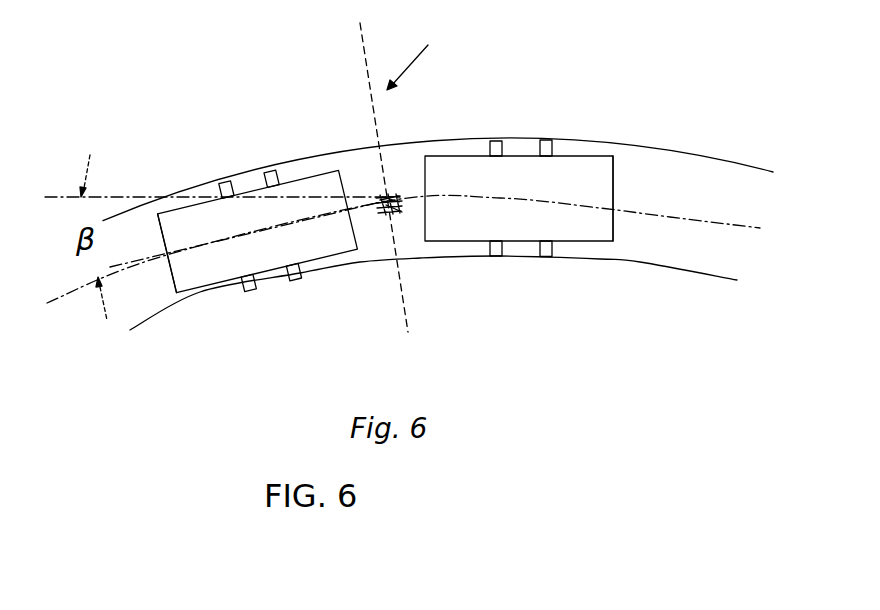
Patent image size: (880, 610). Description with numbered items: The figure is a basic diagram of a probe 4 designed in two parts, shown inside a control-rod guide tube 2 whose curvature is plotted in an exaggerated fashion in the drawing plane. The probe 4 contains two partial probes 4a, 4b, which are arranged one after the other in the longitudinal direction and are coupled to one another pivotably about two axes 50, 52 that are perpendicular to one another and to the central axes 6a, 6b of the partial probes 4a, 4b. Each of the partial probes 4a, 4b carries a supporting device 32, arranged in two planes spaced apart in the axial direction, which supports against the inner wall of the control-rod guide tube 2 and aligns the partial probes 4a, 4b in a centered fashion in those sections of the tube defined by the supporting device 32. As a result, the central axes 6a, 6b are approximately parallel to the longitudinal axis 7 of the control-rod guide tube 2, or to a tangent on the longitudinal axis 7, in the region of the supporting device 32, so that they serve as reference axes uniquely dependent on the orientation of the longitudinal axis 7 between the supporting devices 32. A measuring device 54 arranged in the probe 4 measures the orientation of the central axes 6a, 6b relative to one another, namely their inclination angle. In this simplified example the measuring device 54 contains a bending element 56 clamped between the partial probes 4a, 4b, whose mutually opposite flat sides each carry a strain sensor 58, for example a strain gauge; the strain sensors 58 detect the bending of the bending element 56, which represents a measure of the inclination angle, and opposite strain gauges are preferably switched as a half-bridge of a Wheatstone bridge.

The control-rod guide tube 2 is at (710, 278).
The probe 4 is at (415, 54).
The first partial probe 4a is at (206, 277).
The second partial probe 4b is at (583, 230).
The central axis of first partial probe 6a is at (173, 251).
The central axis of second partial probe 6b is at (587, 197).
The longitudinal axis of the control-rod guide tube 7 is at (765, 233).
The supporting device 32 is at (495, 142).
The first pivot axis 50 is at (360, 30).
The second pivot axis 52 is at (388, 203).
The measuring device 54 is at (404, 220).
The bending element 56 is at (390, 200).
The strain sensor 58 is at (390, 196).